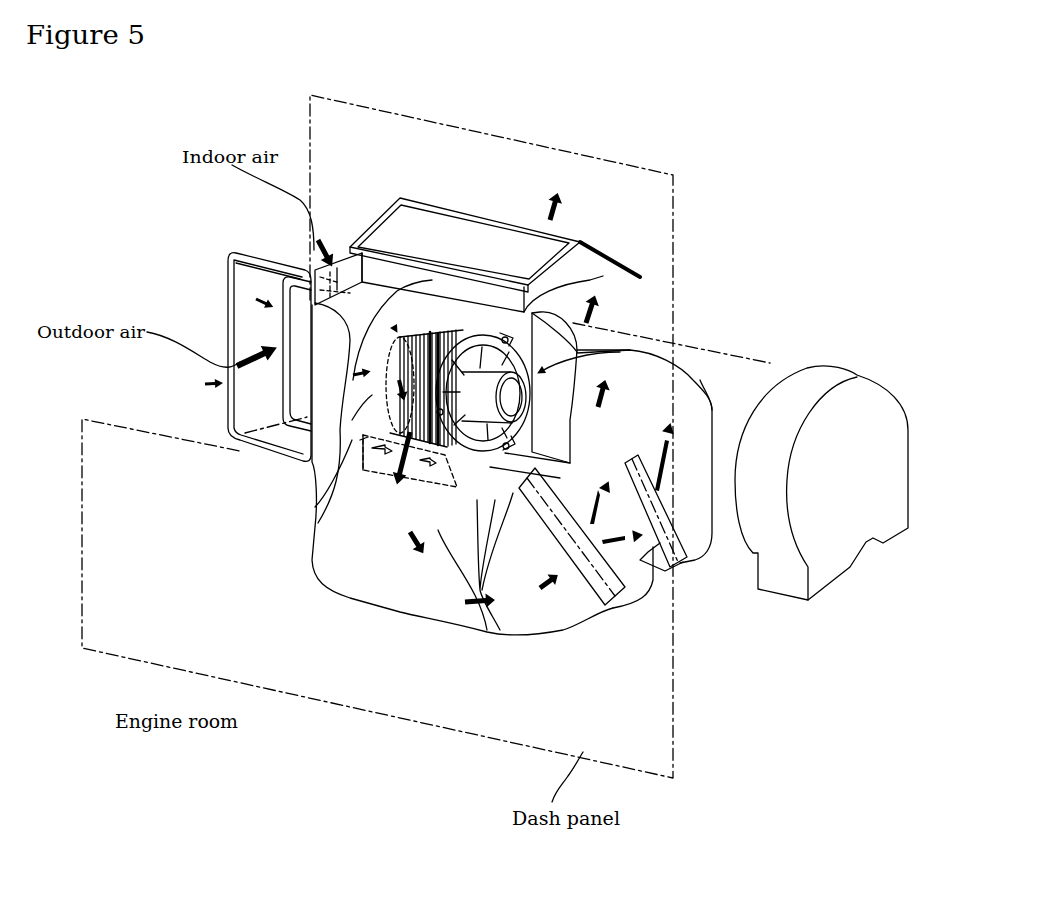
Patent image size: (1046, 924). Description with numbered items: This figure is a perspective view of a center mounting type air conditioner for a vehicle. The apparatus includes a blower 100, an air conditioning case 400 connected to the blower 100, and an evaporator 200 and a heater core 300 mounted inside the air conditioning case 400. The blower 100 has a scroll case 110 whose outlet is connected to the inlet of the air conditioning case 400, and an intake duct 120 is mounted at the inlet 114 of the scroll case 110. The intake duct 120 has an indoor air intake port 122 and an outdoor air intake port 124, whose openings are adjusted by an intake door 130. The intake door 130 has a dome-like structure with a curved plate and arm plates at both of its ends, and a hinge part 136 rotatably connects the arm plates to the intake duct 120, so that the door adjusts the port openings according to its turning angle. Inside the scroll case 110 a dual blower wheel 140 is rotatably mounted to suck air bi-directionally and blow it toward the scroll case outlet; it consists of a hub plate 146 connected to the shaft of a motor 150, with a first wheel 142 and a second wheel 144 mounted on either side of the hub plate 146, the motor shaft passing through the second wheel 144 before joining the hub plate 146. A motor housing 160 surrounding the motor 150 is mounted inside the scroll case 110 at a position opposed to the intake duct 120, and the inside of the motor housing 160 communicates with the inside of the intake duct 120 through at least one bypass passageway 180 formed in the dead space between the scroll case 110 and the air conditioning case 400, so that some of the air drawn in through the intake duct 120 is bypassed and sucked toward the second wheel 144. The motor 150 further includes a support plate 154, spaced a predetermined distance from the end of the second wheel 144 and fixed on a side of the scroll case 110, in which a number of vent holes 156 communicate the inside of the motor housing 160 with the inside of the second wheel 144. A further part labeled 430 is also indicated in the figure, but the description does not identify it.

The blower 100 is at (352, 400).
The scroll case 110 is at (352, 420).
The inlet 114 is at (315, 507).
The intake duct 120 is at (205, 384).
The indoor air intake port 122 is at (340, 280).
The outdoor air intake port 124 is at (252, 330).
The intake door 130 is at (257, 300).
The hinge part 136 is at (357, 240).
The dual blower wheel 140 is at (397, 332).
The first wheel 142 is at (387, 340).
The second wheel 144 is at (437, 345).
The hub plate 146 is at (428, 350).
The motor 150 is at (620, 353).
The support plate 154 is at (603, 276).
The vent holes 156 is at (470, 345).
The motor housing 160 is at (827, 377).
The bypass passageway 180 is at (457, 530).
The evaporator 200 is at (573, 580).
The heater core 300 is at (693, 563).
The air conditioning case 400 is at (687, 377).
The defrost door 430 is at (530, 270).